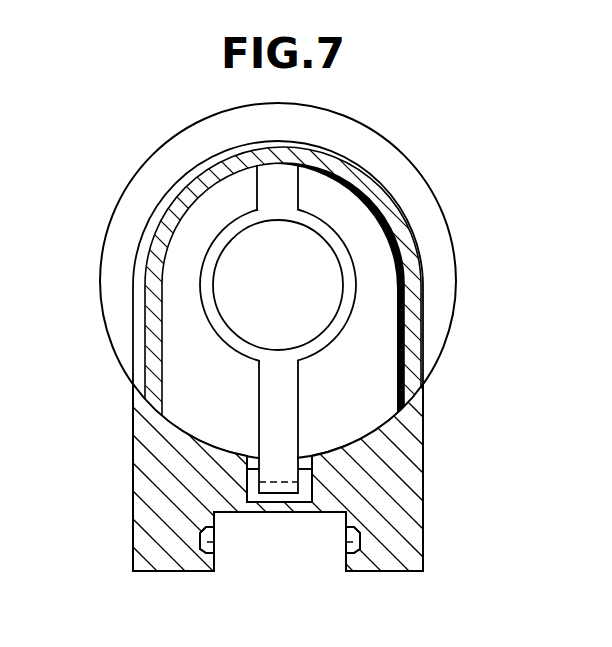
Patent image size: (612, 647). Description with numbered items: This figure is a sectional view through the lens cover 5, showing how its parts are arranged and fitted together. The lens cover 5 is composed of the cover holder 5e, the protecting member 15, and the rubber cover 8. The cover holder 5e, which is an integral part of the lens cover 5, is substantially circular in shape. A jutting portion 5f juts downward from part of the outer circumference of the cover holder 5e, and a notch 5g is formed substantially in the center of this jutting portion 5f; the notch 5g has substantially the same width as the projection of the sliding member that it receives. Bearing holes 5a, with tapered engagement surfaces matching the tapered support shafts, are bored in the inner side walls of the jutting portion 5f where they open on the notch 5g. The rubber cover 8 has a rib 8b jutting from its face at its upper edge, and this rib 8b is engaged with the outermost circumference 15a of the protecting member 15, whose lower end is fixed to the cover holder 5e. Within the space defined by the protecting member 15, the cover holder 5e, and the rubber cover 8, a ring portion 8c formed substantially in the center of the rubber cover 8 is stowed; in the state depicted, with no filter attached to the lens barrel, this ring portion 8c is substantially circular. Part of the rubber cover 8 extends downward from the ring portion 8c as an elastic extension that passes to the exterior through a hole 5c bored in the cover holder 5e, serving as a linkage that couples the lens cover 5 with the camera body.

The lens cover 5 is at (306, 387).
The bearing holes 5a is at (214, 539).
The hole 5c is at (300, 483).
The cover holder 5e is at (148, 488).
The jutting portion 5f is at (385, 543).
The notch 5g is at (283, 538).
The rubber cover 8 is at (438, 309).
The rib 8b is at (367, 328).
The ring portion 8c is at (336, 320).
The protecting member 15 is at (306, 285).
The outermost circumference 15a is at (396, 184).